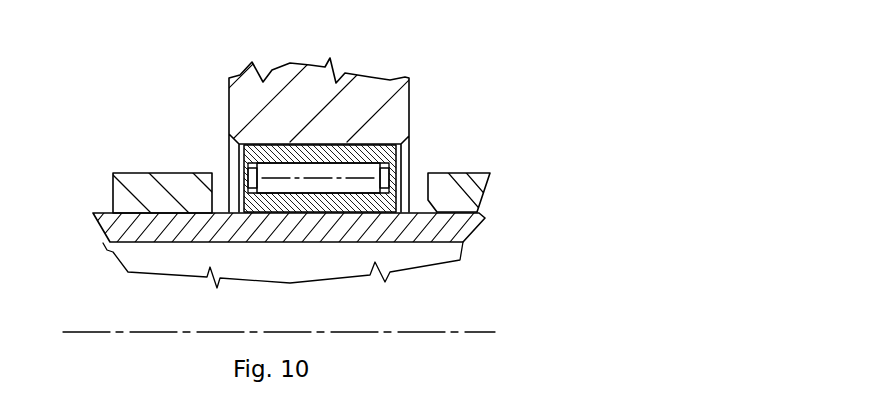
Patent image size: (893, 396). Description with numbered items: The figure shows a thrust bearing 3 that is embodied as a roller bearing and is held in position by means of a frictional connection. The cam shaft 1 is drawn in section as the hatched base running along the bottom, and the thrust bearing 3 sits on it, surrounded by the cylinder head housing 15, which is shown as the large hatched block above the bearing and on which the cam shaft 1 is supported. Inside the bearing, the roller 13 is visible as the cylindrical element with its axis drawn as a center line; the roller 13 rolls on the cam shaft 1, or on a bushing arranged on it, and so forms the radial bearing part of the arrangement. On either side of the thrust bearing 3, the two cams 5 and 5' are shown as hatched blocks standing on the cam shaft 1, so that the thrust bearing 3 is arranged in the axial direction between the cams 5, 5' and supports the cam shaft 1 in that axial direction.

The cylinder head housing 15 is at (384, 70).
The thrust bearing 3 is at (371, 156).
The roller 13 is at (365, 175).
The cam 5' is at (174, 162).
The cam 5 is at (474, 171).
The cam shaft 1 is at (452, 315).